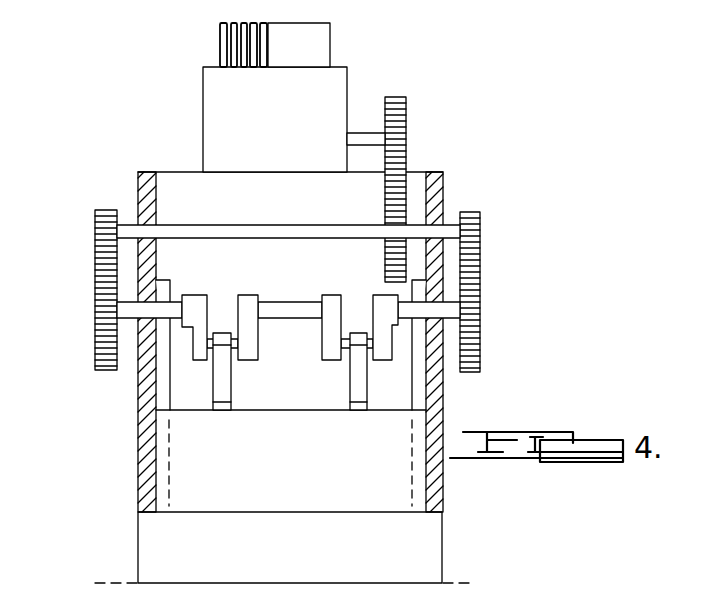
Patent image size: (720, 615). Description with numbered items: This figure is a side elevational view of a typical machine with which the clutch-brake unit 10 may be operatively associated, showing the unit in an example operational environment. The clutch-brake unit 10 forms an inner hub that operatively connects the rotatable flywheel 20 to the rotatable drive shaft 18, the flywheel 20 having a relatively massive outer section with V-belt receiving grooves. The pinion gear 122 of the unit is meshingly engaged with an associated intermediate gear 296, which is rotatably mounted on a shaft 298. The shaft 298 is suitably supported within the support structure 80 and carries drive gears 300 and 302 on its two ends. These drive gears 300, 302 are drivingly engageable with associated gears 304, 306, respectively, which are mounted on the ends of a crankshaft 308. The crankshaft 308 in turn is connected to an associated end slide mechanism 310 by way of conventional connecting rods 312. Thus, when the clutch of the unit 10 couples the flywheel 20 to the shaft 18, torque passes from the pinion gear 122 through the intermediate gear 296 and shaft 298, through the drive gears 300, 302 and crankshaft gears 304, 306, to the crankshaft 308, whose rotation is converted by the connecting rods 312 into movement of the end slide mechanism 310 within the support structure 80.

The clutch-brake unit 10 is at (188, 100).
The rotatable drive shaft 18 is at (360, 133).
The rotatable flywheel 20 is at (332, 37).
The support structure 80 is at (440, 408).
The pinion gear 122 is at (405, 115).
The intermediate gear 296 is at (427, 199).
The shaft 298 is at (338, 208).
The drive gear 300 is at (480, 222).
The drive gear 302 is at (95, 223).
The gear 304 is at (480, 310).
The gear 306 is at (97, 315).
The crankshaft 308 is at (165, 310).
The end slide mechanism 310 is at (313, 503).
The connecting rods 312 is at (353, 375).